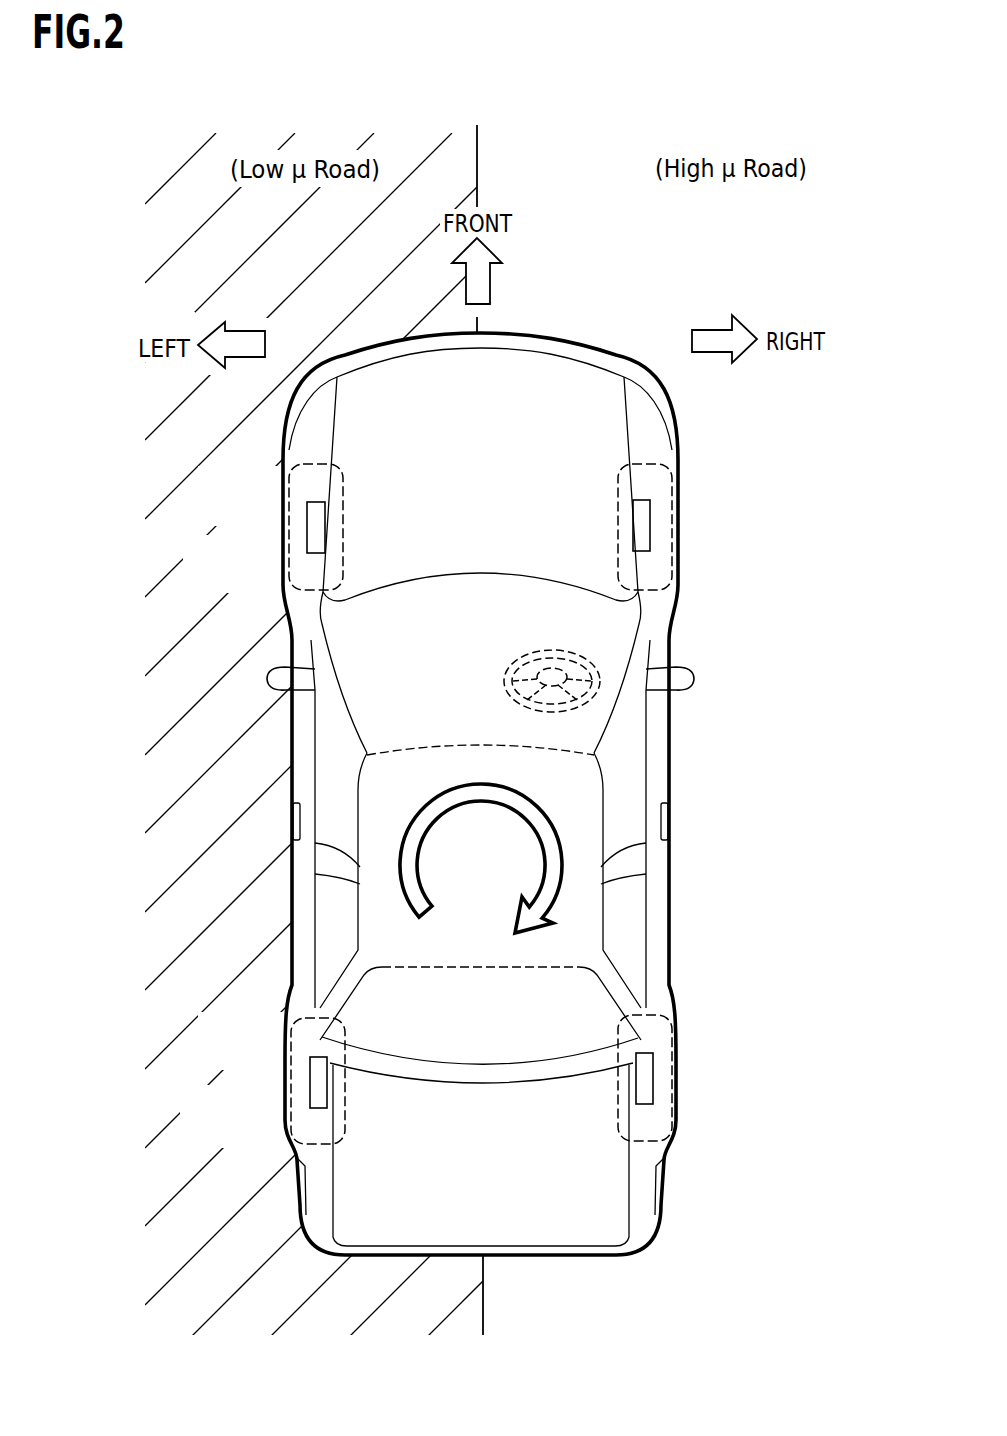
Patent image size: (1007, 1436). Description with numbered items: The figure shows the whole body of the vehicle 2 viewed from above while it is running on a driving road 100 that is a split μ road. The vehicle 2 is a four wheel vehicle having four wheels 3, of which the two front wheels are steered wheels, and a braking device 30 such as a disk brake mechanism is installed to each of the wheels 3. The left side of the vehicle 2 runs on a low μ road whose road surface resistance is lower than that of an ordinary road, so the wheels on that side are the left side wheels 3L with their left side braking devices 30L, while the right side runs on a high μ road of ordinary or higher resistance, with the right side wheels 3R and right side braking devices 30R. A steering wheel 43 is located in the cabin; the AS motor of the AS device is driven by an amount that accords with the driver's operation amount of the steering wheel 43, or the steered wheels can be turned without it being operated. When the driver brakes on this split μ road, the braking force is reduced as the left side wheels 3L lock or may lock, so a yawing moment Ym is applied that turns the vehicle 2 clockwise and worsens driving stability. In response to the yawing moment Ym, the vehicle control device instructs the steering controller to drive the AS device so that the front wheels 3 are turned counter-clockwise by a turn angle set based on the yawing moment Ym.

The driving road 100 is at (503, 112).
The vehicle 2 is at (563, 338).
The wheels 3 is at (491, 795).
The left side wheels 3L is at (290, 520).
The right side wheels 3R is at (672, 488).
The braking device 30 is at (497, 818).
The left side braking device 30L is at (307, 538).
The right side braking device 30R is at (650, 525).
The steering wheel 43 is at (598, 697).
The yawing moment Ym is at (560, 890).